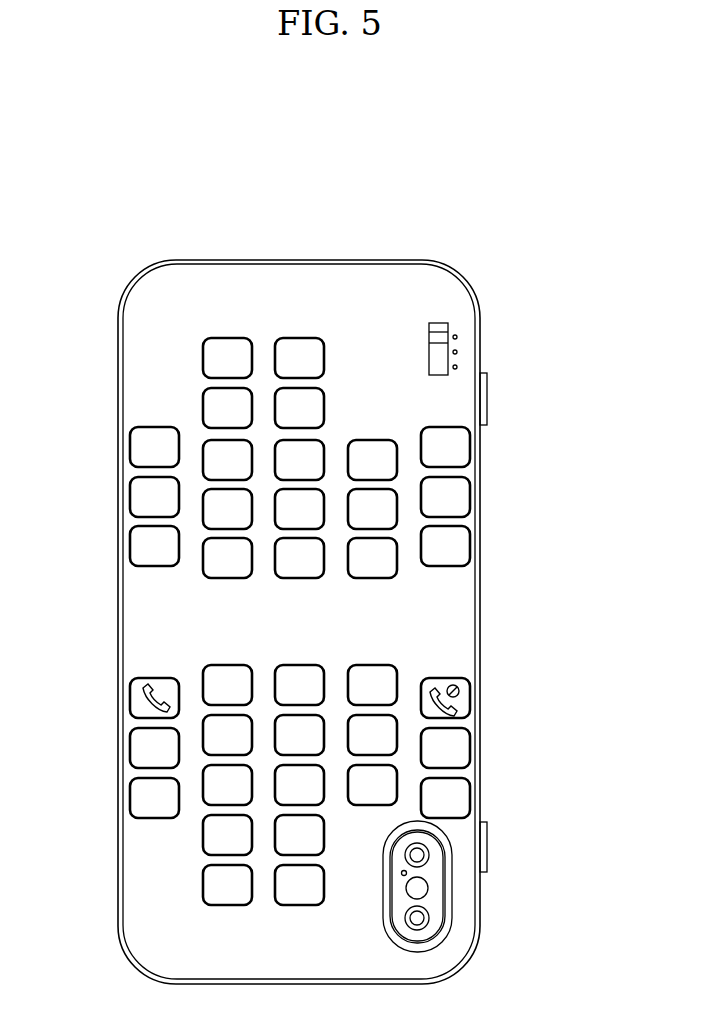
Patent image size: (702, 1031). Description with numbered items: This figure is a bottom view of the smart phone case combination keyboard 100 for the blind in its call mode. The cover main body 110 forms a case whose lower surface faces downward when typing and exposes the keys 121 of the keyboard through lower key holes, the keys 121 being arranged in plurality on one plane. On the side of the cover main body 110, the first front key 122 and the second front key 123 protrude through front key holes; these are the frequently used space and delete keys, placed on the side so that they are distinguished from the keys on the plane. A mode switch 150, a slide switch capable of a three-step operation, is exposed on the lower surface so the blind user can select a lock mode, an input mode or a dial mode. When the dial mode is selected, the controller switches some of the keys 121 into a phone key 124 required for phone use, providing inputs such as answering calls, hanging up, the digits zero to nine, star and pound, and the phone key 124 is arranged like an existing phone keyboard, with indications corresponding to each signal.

The smart phone case combination keyboard 100 is at (300, 146).
The cover main body 110 is at (377, 238).
The key 121 is at (457, 494).
The first front key 122 is at (488, 398).
The second front key 123 is at (488, 845).
The phone key 124 is at (134, 698).
The mode switch 150 is at (438, 335).